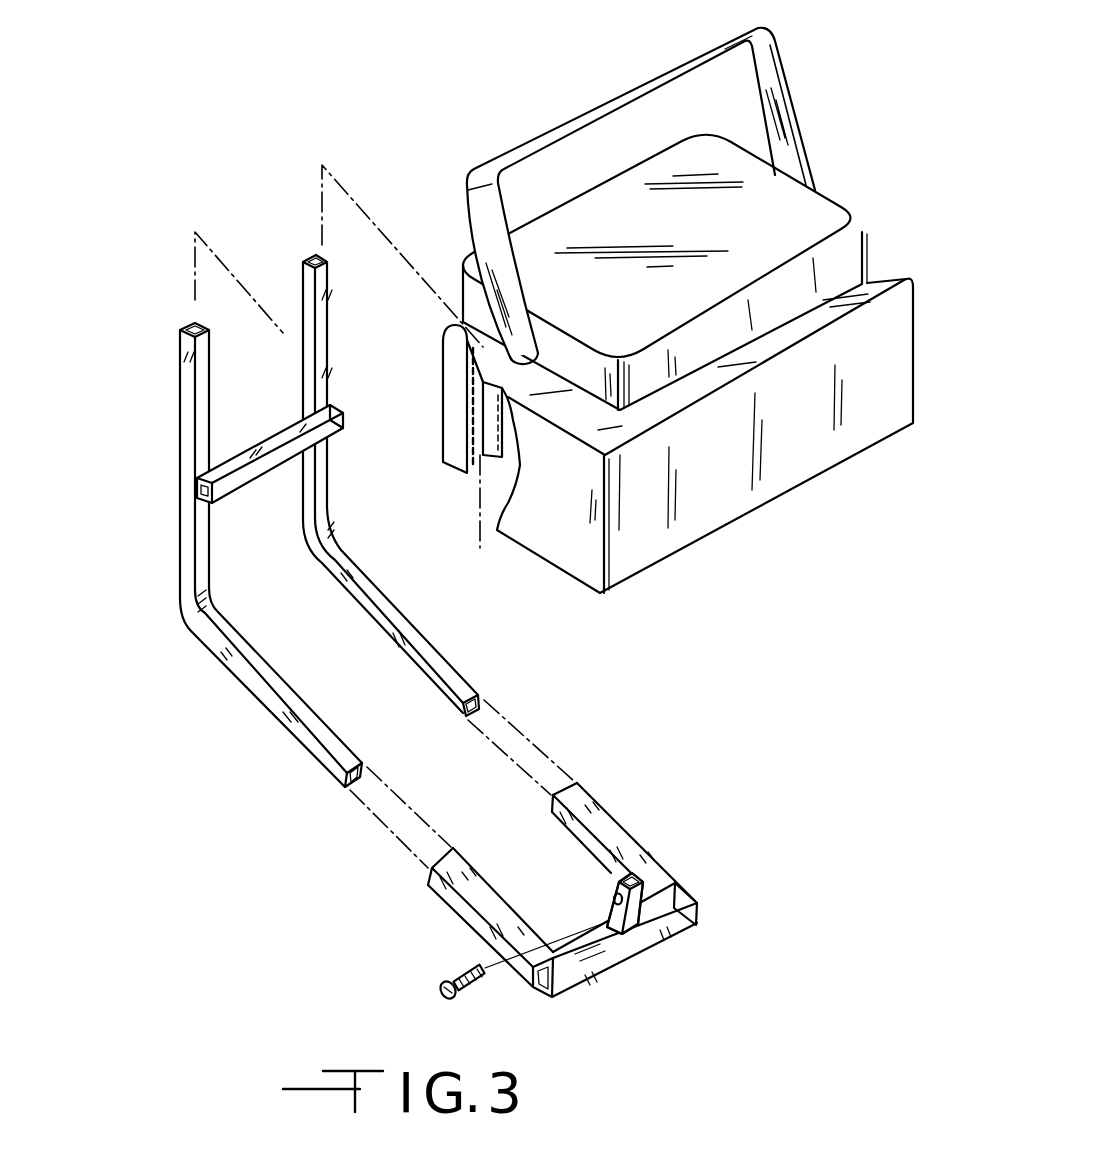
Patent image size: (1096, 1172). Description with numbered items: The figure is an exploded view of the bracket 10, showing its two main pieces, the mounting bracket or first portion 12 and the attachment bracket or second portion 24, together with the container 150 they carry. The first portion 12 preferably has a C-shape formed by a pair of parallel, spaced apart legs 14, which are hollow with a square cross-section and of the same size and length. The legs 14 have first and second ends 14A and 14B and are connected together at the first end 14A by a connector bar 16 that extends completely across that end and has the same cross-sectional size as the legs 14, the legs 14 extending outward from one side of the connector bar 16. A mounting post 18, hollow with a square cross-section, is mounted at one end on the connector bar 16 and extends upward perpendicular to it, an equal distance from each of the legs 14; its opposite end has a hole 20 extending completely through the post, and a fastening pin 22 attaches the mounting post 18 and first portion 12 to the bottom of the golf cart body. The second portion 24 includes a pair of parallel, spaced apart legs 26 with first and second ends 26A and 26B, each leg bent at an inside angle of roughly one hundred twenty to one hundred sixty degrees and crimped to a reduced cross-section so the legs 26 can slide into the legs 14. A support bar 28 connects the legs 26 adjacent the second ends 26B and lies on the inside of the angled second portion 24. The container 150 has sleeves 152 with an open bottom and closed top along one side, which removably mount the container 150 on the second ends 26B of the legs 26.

The bracket 10 is at (241, 726).
The first portion 12 is at (670, 814).
The legs 14 is at (477, 915).
The first end 14A is at (684, 875).
The second end 14B is at (593, 775).
The connector bar 16 is at (672, 934).
The mounting post 18 is at (704, 956).
The hole 20 is at (620, 905).
The fastening pin 22 is at (466, 985).
The second portion 24 is at (207, 645).
The legs 26 is at (212, 553).
The first end 26A is at (430, 639).
The second end 26B is at (181, 344).
The support bar 28 is at (283, 465).
The container 150 is at (716, 502).
The sleeves 152 is at (455, 381).